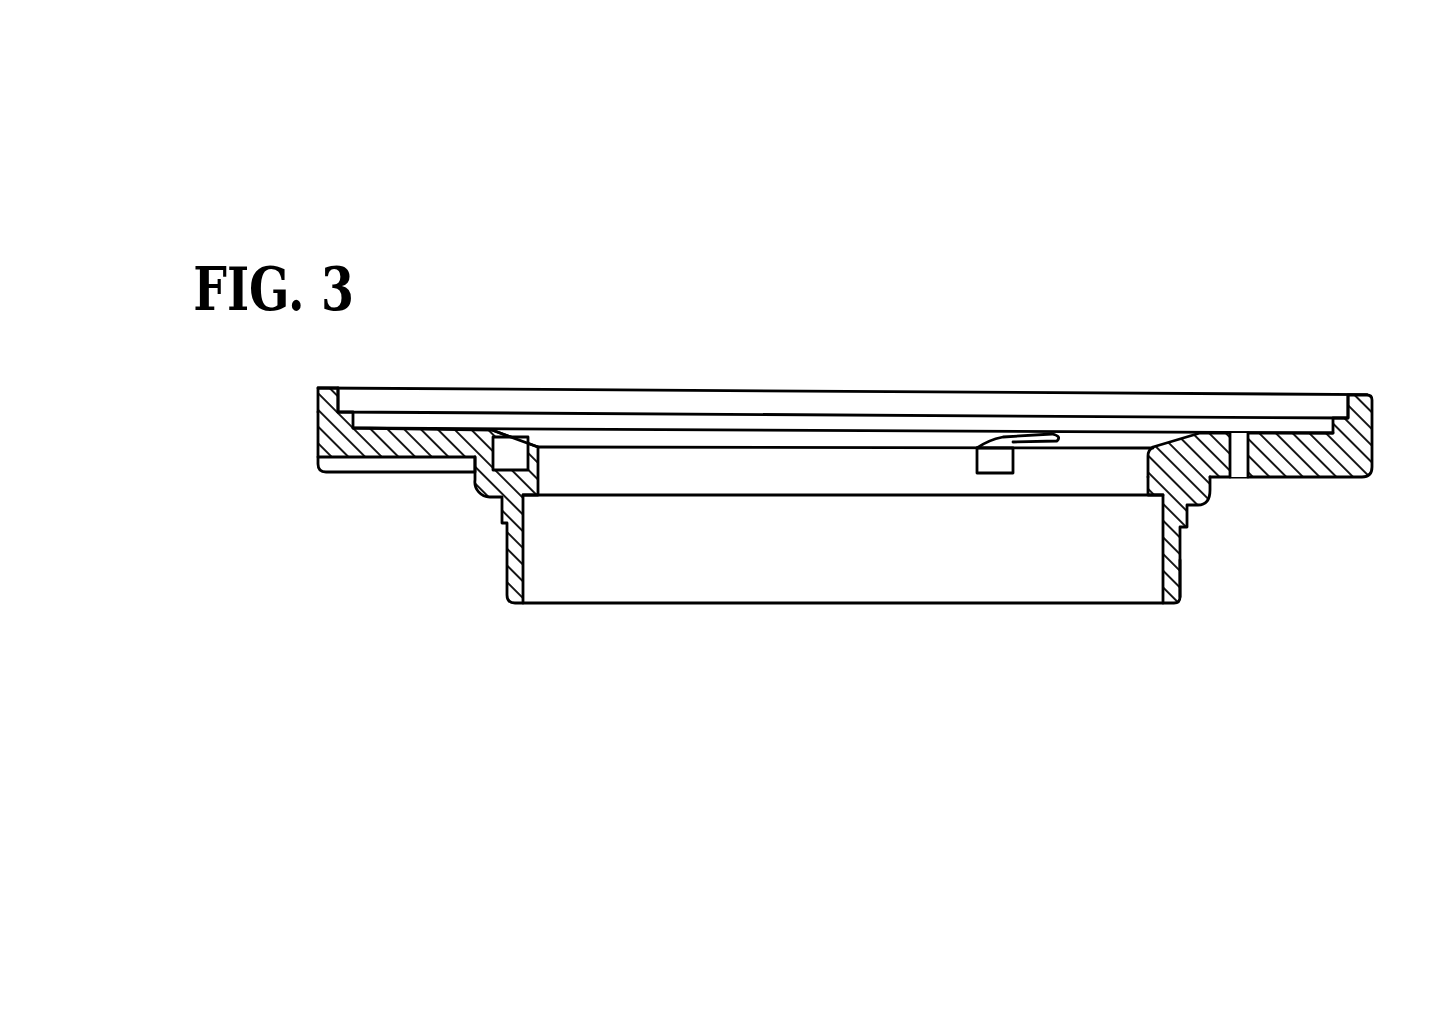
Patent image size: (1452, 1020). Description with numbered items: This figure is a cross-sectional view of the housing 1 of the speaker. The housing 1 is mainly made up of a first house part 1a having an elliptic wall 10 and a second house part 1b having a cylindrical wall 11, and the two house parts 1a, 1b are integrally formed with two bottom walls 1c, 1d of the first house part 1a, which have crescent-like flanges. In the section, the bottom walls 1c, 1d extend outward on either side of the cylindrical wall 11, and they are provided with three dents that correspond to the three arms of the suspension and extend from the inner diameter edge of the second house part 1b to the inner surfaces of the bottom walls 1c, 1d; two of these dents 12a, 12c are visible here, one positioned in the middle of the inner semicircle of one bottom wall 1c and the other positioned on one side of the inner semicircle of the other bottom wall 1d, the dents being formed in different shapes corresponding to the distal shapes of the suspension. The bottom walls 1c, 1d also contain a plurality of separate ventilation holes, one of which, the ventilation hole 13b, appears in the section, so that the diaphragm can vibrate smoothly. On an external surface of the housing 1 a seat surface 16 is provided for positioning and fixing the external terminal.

The housing 1 is at (880, 580).
The first house part 1a is at (649, 368).
The second house part 1b is at (1203, 598).
The bottom wall 1c is at (415, 432).
The bottom wall 1d is at (1315, 432).
The elliptic wall 10 is at (352, 388).
The cylindrical wall 11 is at (1163, 555).
The dent 12a is at (514, 452).
The dent 12c is at (1000, 460).
The ventilation hole 13b is at (1238, 467).
The seat surface 16 is at (383, 457).